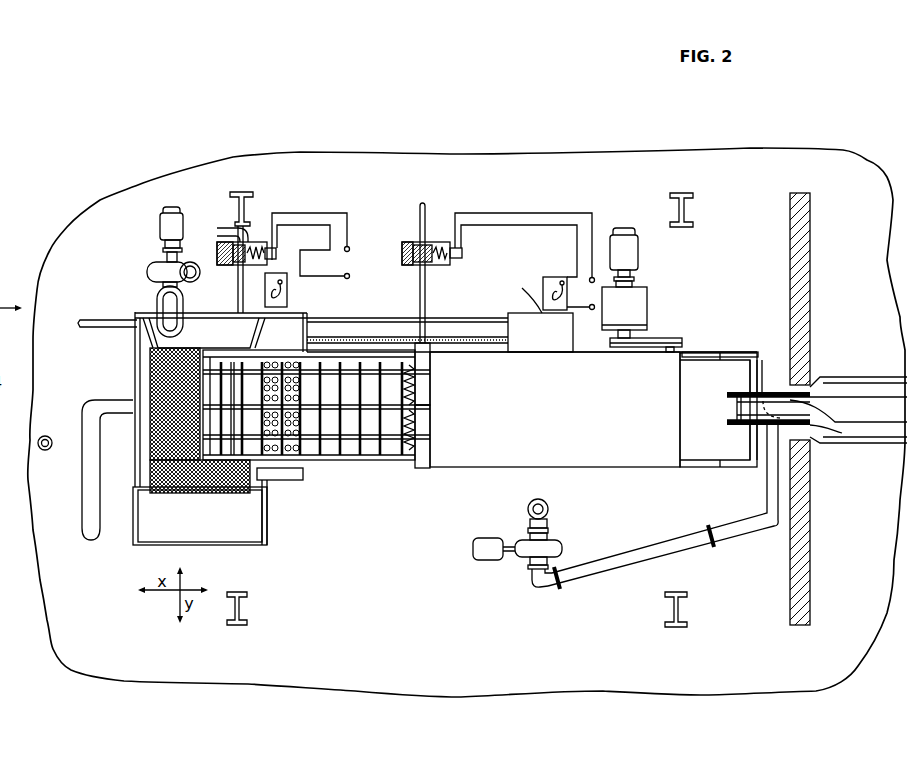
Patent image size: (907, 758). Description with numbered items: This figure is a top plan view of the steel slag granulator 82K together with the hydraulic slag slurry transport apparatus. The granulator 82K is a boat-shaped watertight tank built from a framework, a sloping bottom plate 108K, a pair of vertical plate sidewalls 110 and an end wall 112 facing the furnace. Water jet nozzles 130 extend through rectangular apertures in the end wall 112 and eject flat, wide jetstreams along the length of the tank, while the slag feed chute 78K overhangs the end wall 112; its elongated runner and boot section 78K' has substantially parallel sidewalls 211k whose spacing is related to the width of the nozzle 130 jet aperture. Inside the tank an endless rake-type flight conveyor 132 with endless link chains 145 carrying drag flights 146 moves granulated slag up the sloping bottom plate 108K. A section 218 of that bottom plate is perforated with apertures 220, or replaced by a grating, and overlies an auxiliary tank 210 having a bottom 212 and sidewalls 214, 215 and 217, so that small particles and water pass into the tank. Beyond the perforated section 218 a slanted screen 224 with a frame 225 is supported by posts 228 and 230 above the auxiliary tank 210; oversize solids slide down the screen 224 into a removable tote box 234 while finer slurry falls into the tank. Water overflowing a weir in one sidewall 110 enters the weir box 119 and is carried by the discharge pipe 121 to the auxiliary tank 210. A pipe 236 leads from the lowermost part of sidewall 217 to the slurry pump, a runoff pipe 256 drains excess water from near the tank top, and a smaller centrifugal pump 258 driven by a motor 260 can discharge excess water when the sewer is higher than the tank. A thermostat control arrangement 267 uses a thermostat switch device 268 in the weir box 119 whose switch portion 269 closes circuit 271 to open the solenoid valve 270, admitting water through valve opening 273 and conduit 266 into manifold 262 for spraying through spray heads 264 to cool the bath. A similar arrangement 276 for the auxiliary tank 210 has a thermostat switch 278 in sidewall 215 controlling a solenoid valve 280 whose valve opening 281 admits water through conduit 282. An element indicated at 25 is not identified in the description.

The sidewall of auxiliary tank 217 is at (137, 362).
The sidewall of auxiliary tank 215 is at (190, 312).
The post 230 is at (147, 336).
The post 228 is at (254, 330).
The tote box 234 is at (249, 529).
The sidewall of auxiliary tank 212 is at (270, 487).
The sidewall of auxiliary tank 214 is at (303, 476).
The auxiliary tank 210 is at (302, 308).
The frame of screen 225 is at (188, 347).
The slanted screen 224 is at (143, 460).
The pipe 236 is at (90, 446).
The runoff pipe 256 is at (105, 320).
The centrifugal pump 258 is at (142, 272).
The motor 260 is at (156, 230).
The water input conduit 282 is at (234, 222).
The solenoid operated valve 280 is at (220, 242).
The valve opening 281 is at (217, 252).
The thermostatic control arrangement 276 is at (267, 205).
The thermostat switch 278 is at (283, 273).
The apertures 220 is at (296, 343).
The discharge pipe 121 is at (404, 330).
The sloping bottom rectangular plate 108K is at (348, 455).
The vertical plate sidewalls 110 is at (348, 352).
The endless rake-type flight conveyor 132 is at (391, 453).
The perforated plate section 218 is at (274, 362).
The endless link chains 145 is at (350, 377).
The lower coil 146 is at (350, 423).
The manifold 262 is at (431, 366).
The spray heads 264 is at (431, 443).
The water supply conduit 266 is at (427, 210).
The solenoid control valve 270 is at (447, 262).
The valve opening 273 is at (415, 247).
The circuit 271 is at (562, 220).
The thermostat control arrangement 267 is at (544, 262).
The switch portion 269 is at (560, 277).
The water discharge box 119 is at (521, 292).
The thermostat switch device 268 is at (540, 332).
The slag granulator 82K is at (507, 472).
The end wall 112 is at (760, 352).
The water jet nozzle 130 is at (761, 389).
The slag feed chute 78K is at (858, 434).
The runner and boot section 78K' is at (848, 373).
The sidewalls of chute end portion 211k is at (812, 425).
The wall 25 is at (807, 453).